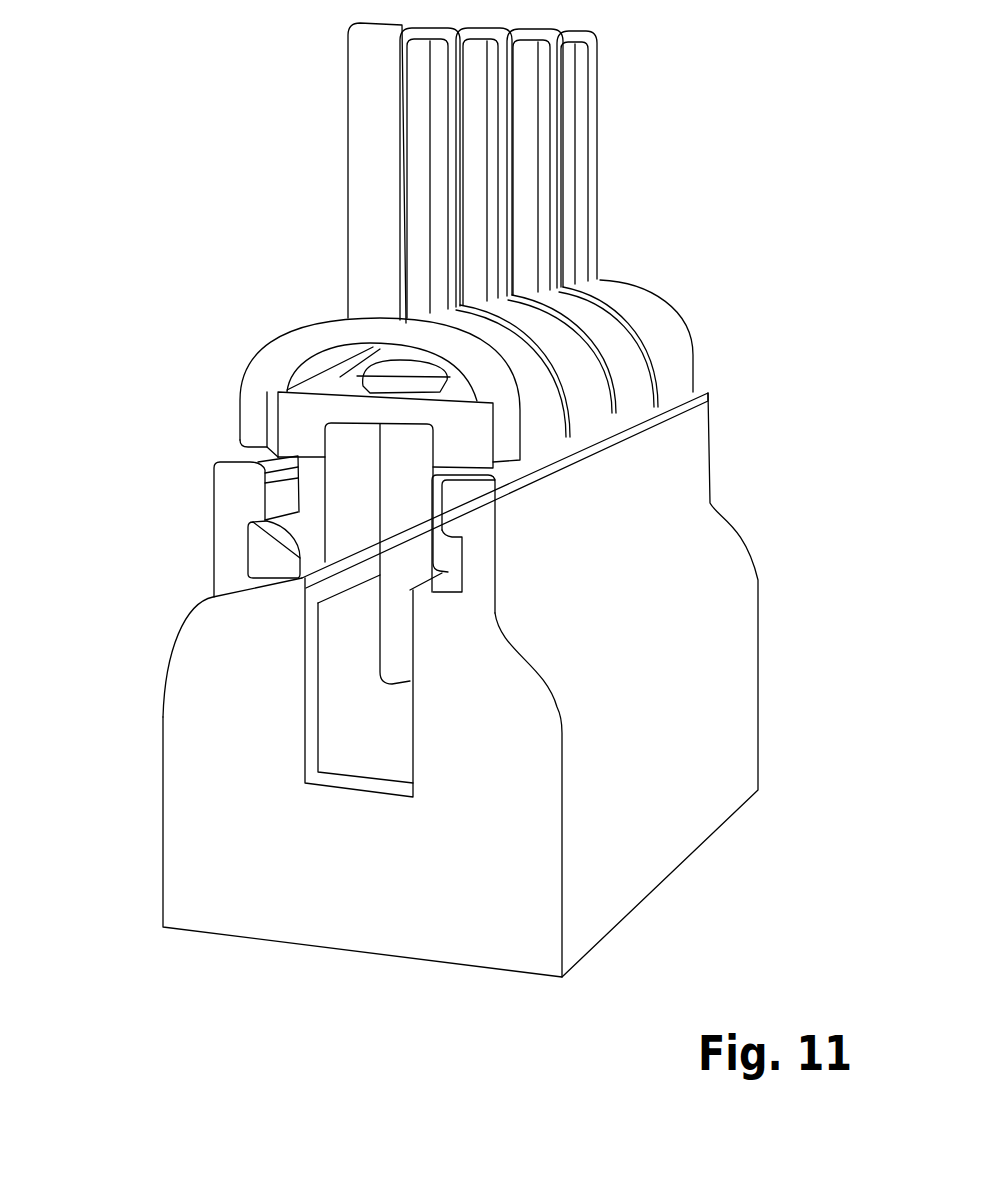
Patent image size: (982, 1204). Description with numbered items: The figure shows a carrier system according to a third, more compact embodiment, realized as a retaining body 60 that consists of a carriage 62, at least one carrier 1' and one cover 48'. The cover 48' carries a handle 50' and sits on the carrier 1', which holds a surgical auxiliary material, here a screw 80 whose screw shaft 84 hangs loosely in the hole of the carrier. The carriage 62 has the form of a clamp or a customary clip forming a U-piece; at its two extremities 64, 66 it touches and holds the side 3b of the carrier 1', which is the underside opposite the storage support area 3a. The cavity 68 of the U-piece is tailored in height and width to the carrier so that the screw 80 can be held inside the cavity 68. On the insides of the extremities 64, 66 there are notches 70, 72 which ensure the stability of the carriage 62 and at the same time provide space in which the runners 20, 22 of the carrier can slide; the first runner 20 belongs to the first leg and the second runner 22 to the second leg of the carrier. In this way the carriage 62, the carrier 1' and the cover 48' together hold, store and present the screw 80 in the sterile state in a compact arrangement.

The retaining body 60 is at (132, 55).
The handle 50' is at (432, 174).
The cover 48' is at (407, 173).
The storage support area 3a is at (327, 385).
The carrier 1' is at (329, 429).
The side opposite the storage support area 3b is at (267, 448).
The screw 80 is at (365, 481).
The extremity 64 is at (240, 500).
The screw shaft 84 is at (302, 553).
The notch 70 is at (258, 562).
The first runner 20 is at (240, 582).
The cavity 68 is at (365, 737).
The carriage 62 is at (698, 543).
The extremity 66 is at (463, 512).
The second runner 22 is at (445, 547).
The notch 72 is at (455, 577).